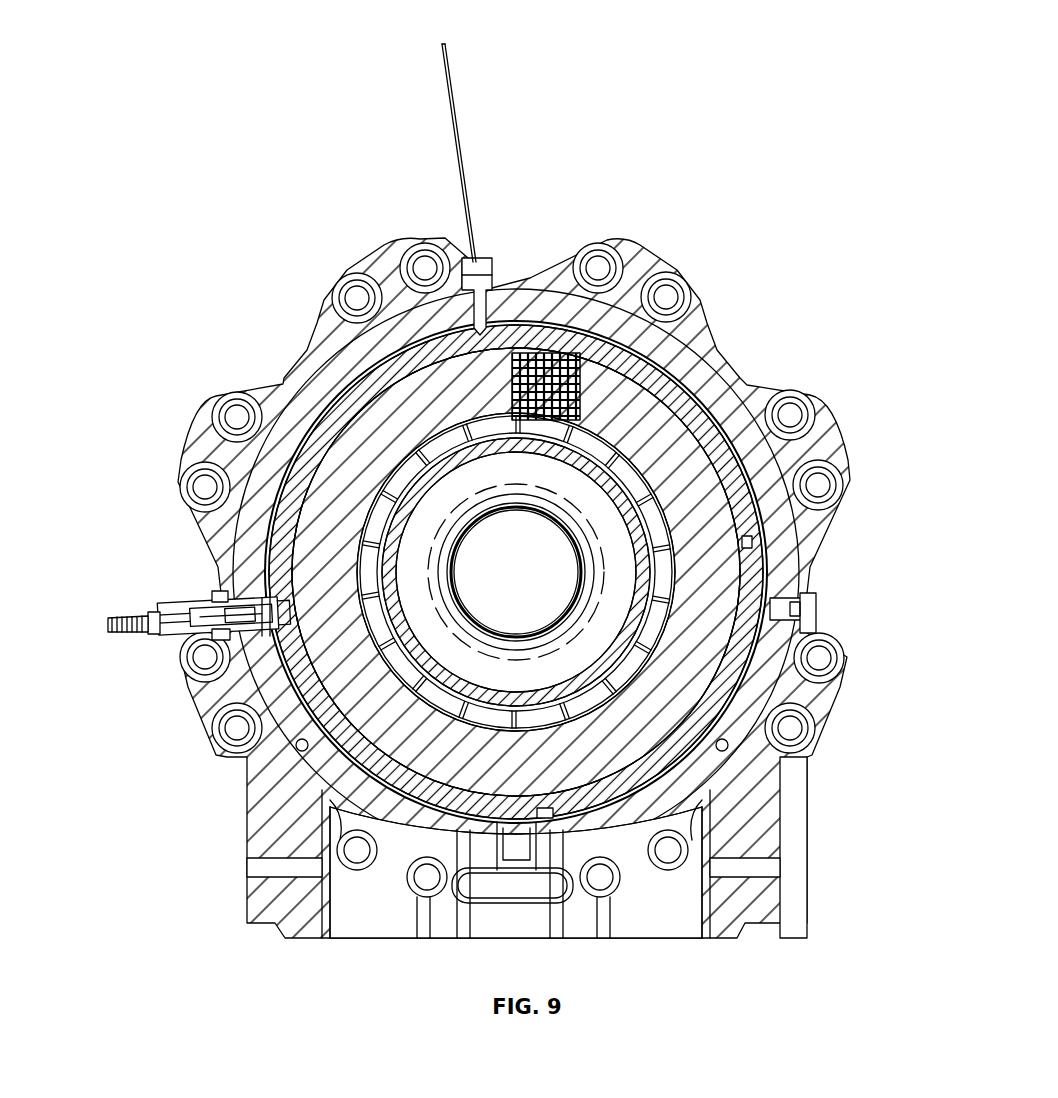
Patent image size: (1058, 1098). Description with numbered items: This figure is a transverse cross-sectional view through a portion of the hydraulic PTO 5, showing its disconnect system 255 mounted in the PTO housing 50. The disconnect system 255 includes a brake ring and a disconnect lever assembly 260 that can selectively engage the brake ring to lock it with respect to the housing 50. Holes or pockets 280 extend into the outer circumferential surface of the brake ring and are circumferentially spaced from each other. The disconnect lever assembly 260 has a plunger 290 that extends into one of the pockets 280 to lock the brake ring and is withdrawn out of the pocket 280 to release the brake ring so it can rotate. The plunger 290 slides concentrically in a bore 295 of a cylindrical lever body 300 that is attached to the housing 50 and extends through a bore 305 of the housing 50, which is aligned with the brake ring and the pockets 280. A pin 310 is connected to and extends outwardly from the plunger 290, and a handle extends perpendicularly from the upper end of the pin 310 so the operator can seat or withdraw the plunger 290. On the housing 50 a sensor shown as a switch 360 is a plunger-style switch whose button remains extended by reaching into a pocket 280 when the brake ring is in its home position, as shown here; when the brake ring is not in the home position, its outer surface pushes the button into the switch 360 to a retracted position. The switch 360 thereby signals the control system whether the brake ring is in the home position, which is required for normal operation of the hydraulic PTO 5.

The hydraulic PTO 5 is at (718, 78).
The PTO housing 50 is at (666, 252).
The disconnect system 255 is at (173, 578).
The disconnect lever assembly 260 is at (179, 632).
The pockets 280 is at (480, 330).
The plunger 290 is at (298, 567).
The bore 295 is at (258, 628).
The cylindrical lever body 300 is at (178, 643).
The bore 305 is at (222, 590).
The pin 310 is at (165, 604).
The switch 360 is at (488, 275).